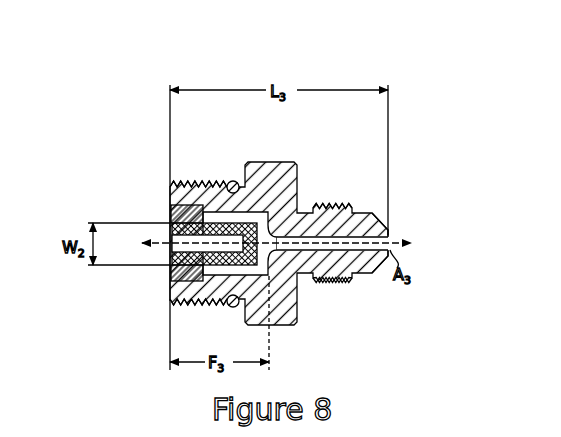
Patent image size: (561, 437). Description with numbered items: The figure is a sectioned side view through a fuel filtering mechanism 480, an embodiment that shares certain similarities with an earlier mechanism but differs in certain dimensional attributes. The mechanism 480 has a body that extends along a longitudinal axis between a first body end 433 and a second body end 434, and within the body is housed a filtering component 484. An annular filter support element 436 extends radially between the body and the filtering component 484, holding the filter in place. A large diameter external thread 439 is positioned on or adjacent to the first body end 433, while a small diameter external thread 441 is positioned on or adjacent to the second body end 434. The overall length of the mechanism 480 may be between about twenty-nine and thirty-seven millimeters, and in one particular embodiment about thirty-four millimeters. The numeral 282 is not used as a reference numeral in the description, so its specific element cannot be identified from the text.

The mechanism 480 is at (243, 218).
The body 282 is at (272, 162).
The first body end 433 is at (160, 185).
The large diameter external thread 439 is at (218, 181).
The second body end 434 is at (396, 232).
The annular filter support element 436 is at (170, 272).
The filtering component 484 is at (230, 267).
The small diameter external thread 441 is at (333, 284).